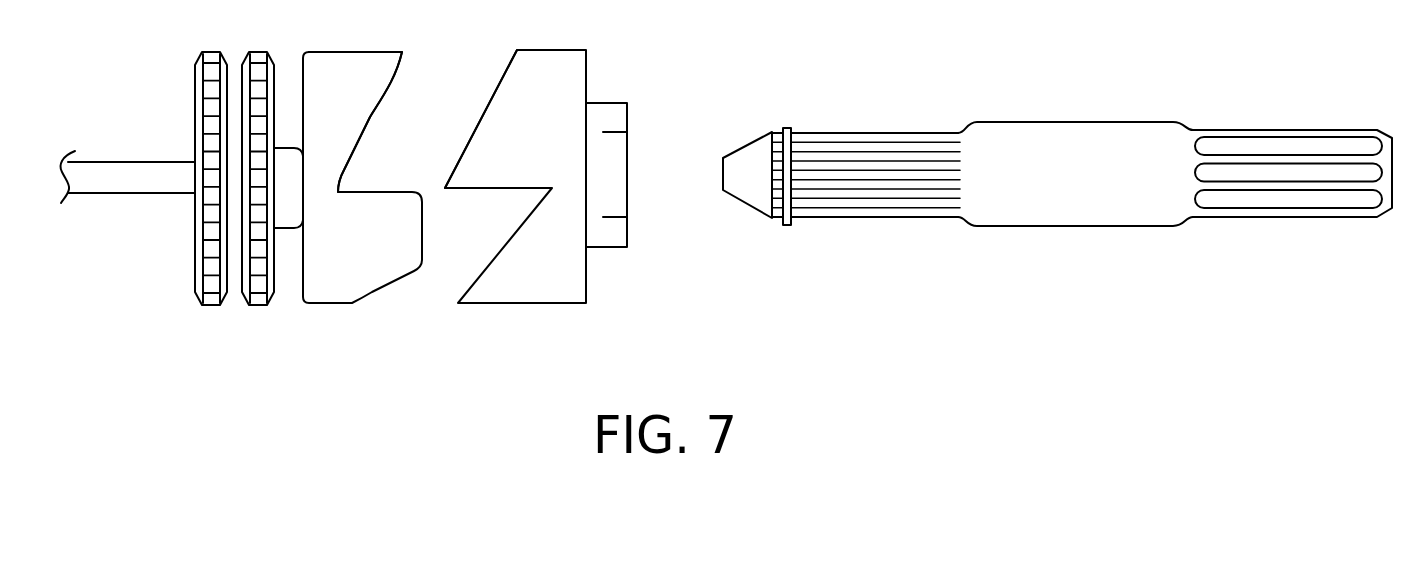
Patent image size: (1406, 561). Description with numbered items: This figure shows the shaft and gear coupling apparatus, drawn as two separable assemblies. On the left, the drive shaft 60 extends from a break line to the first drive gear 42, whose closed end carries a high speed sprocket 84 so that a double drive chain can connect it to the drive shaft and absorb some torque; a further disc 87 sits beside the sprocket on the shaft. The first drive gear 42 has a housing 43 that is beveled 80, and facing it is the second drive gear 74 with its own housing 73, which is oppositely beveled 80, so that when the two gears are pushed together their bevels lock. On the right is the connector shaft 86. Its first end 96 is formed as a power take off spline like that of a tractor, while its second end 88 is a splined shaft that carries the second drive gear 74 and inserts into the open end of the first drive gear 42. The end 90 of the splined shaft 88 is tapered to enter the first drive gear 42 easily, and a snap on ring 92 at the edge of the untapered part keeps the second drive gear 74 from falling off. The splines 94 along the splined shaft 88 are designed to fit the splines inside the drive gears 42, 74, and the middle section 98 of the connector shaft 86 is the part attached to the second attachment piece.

The first drive gear 42 is at (332, 311).
The housing 43 is at (357, 70).
The drive shaft 60 is at (88, 203).
The housing 73 is at (597, 118).
The second drive gear 74 is at (522, 311).
The bevel 80 is at (373, 154).
The high speed sprocket 84 is at (263, 311).
The connector shaft 86 is at (1082, 284).
The first disc 87 is at (210, 311).
The second end 88 is at (866, 178).
The end 90 is at (732, 146).
The snap on ring 92 is at (787, 126).
The splines 94 is at (877, 168).
The first end 96 is at (1294, 219).
The middle section 98 is at (1096, 118).